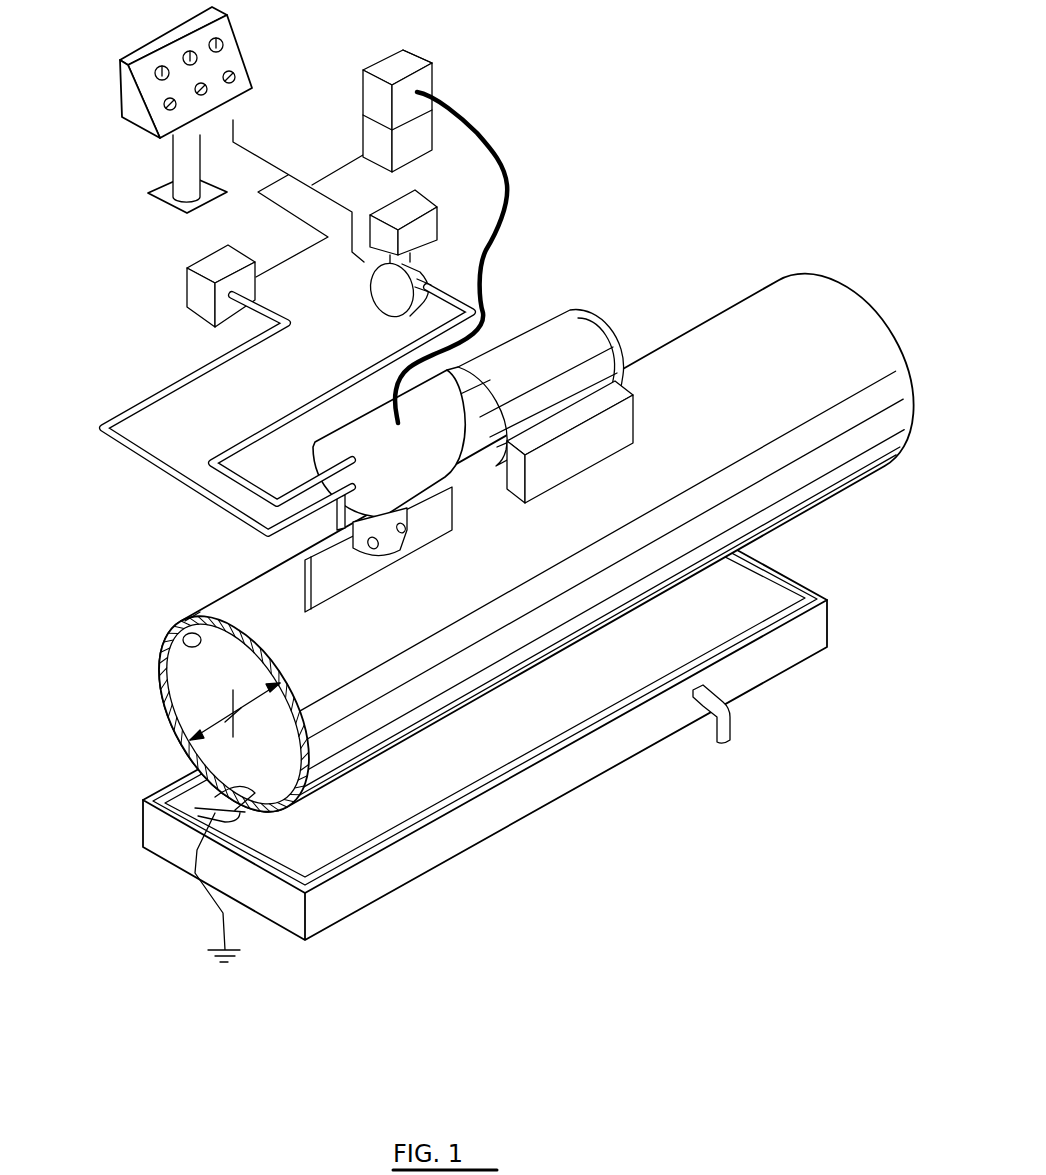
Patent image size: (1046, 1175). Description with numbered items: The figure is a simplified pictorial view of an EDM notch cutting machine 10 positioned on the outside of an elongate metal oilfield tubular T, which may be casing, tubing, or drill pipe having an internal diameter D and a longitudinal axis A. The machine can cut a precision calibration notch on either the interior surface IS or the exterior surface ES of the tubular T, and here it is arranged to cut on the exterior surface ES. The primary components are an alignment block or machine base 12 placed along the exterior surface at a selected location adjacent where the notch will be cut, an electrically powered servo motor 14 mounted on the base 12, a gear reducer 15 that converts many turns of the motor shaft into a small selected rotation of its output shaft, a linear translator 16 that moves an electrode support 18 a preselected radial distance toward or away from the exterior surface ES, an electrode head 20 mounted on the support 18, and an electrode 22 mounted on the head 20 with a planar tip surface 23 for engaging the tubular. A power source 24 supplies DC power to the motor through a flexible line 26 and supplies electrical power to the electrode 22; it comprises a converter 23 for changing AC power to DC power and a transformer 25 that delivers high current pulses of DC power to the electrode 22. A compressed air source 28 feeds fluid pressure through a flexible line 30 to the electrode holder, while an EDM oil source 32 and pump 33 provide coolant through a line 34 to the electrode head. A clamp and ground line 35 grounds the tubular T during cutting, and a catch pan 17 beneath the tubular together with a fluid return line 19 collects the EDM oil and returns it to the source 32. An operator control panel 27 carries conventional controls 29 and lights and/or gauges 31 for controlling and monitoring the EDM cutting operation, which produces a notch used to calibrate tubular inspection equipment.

The notch cutting machine 10 is at (583, 214).
The machine base 12 is at (622, 430).
The servo motor 14 is at (597, 367).
The gear reducer 15 is at (540, 400).
The linear translator 16 is at (440, 388).
The catch pan 17 is at (753, 667).
The electrode support 18 is at (433, 445).
The fluid return line 19 is at (737, 725).
The electrode head 20 is at (407, 513).
The electrode 22 is at (327, 587).
The converter 23 is at (375, 88).
The power source 24 is at (427, 53).
The transformer 25 is at (377, 137).
The flexible line 26 is at (447, 98).
The operator control panel 27 is at (158, 37).
The compressed air source 28 is at (200, 298).
The controls 29 is at (155, 74).
The flexible line 30 is at (147, 465).
The lights and/or gauges 31 is at (165, 105).
The EDM oil source 32 is at (385, 240).
The pump 33 is at (383, 296).
The coolant line 34 is at (307, 412).
The clamp and ground line 35 is at (197, 812).
The tubular T is at (827, 504).
The internal diameter D is at (235, 711).
The axis A is at (233, 717).
The exterior surface ES is at (270, 603).
The interior surface IS is at (190, 617).